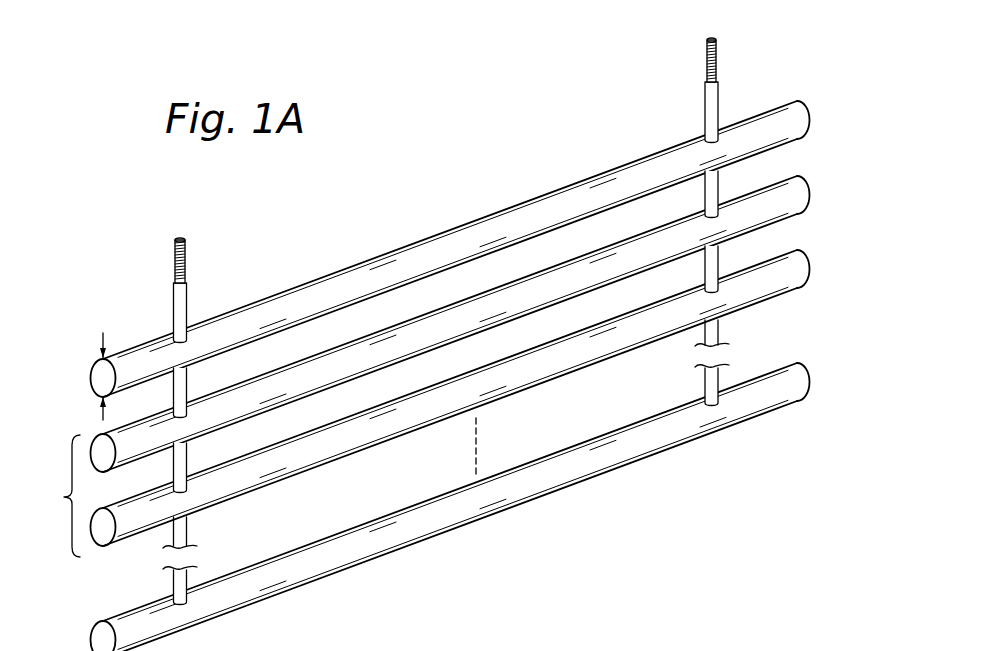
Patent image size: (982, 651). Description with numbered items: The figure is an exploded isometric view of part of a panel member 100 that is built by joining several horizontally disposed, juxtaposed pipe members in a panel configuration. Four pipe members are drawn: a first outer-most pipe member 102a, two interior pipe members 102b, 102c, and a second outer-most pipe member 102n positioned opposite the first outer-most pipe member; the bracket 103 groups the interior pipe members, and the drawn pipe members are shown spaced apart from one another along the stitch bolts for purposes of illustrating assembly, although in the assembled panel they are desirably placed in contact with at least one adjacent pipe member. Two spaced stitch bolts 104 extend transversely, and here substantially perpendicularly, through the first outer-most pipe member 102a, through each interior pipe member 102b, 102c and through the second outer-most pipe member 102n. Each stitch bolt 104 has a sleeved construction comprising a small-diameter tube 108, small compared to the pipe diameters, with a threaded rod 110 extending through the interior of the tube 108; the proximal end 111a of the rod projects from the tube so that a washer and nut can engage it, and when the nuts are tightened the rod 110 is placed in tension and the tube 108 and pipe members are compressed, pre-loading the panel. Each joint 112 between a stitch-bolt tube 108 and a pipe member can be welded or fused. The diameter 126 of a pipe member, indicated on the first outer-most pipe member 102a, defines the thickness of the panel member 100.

The panel member 100 is at (851, 650).
The first outer-most pipe member 102a is at (772, 106).
The interior pipe member 102b is at (772, 182).
The interior pipe member 102c is at (772, 254).
The second outer-most pipe member 102n is at (772, 368).
The intermediate rods 103 is at (49, 496).
The stitch bolt 104 is at (443, 303).
The tube 108 is at (188, 312).
The rod 110 is at (176, 262).
The proximal end of the rod 111a is at (408, 122).
The joint 112 is at (173, 338).
The pipe member's diameter 126 is at (101, 338).